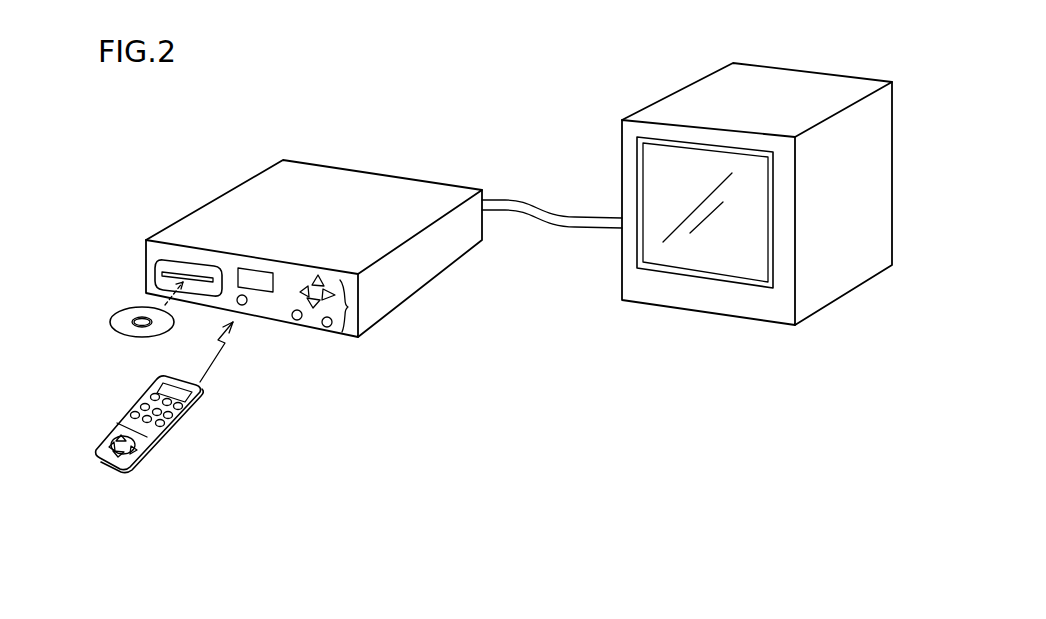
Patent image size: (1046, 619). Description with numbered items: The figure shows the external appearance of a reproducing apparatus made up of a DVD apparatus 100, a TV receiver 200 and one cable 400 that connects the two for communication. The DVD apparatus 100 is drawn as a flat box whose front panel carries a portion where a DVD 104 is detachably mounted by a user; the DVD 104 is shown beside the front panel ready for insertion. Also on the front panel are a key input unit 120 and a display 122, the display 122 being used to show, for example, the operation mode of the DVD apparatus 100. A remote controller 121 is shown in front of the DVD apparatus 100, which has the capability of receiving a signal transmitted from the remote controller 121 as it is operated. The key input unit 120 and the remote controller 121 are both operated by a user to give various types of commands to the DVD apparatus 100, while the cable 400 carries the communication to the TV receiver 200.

The DVD apparatus 100 is at (314, 266).
The DVD 104 is at (130, 330).
The key input unit 120 is at (347, 337).
The remote controller 121 is at (178, 423).
The display 122 is at (250, 268).
The TV receiver 200 is at (787, 68).
The cable 400 is at (554, 210).